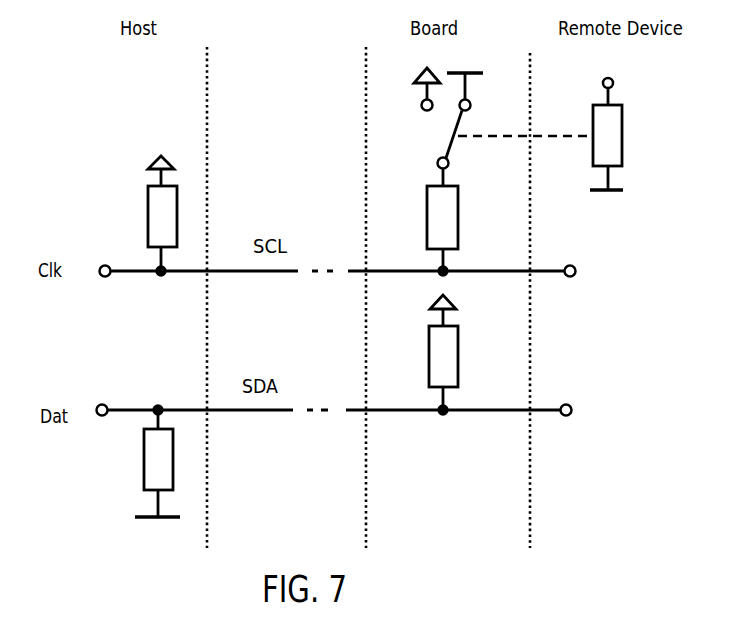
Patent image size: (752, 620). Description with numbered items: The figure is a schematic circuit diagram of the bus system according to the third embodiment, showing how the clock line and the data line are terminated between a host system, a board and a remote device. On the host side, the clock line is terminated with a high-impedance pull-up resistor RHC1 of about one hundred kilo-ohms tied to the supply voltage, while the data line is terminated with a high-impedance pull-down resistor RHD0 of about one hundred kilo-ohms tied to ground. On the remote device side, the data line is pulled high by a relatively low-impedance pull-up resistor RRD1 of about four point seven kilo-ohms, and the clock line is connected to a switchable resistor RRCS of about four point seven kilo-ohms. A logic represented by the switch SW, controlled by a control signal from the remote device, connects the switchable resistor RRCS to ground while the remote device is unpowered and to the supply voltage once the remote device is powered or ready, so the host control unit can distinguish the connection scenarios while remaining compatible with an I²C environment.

The pull-up resistor RHC1 is at (139, 213).
The pull-down resistor RHD0 is at (139, 477).
The switchable resistor RRCS is at (486, 169).
The pull-up resistor RRD1 is at (464, 350).
The switch SW is at (624, 143).